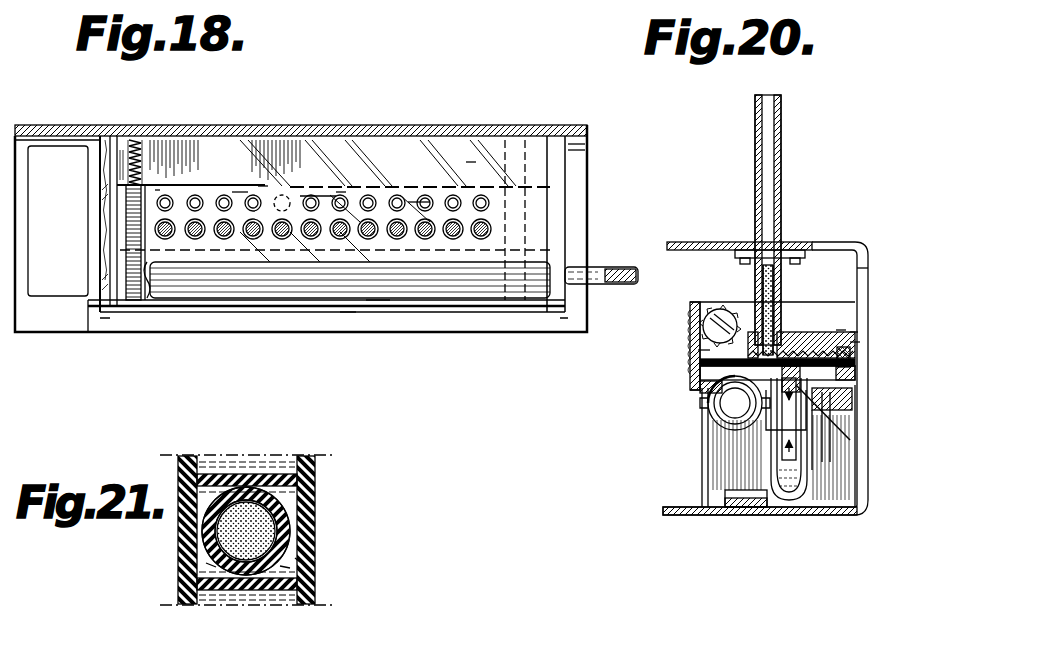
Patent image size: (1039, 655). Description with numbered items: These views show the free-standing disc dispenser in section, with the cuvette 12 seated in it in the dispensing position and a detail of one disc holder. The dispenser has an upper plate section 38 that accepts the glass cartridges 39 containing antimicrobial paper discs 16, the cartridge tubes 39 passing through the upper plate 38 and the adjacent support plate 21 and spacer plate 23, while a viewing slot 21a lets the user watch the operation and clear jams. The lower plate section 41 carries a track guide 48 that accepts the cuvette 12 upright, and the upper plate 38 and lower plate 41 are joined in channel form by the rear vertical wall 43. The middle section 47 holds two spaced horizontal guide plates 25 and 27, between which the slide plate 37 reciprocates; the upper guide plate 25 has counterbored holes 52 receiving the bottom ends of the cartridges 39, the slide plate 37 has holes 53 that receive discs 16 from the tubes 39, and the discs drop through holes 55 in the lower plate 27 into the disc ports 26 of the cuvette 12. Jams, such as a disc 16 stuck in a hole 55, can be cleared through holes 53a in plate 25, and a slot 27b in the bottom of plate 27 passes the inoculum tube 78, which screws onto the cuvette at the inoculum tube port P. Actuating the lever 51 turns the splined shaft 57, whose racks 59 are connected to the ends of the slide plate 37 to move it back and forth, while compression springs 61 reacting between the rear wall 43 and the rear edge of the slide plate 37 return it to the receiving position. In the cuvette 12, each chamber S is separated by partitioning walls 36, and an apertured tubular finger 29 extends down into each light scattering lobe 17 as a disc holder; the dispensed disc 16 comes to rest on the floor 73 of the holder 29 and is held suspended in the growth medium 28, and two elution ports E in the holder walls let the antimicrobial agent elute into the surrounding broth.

In FIG. 18, the cuvette 12 is at (74, 238).
In FIG. 20, the cuvette 12 is at (700, 461).
In FIG. 18, the antimicrobial paper disc 16 is at (196, 224).
In FIG. 20, the antimicrobial paper disc 16 is at (762, 345).
In FIG. 21, the antimicrobial paper disc 16 is at (272, 531).
In FIG. 21, the light scattering lobe 17 is at (190, 488).
In FIG. 20, the support plate 21 is at (818, 258).
In FIG. 20, the viewing slot 21a is at (858, 270).
In FIG. 20, the spacer plate 23 is at (798, 252).
In FIG. 18, the upper guide plate 25 is at (470, 162).
In FIG. 20, the upper guide plate 25 is at (840, 330).
In FIG. 20, the disc port 26 is at (853, 400).
In FIG. 18, the lower guide plate 27 is at (262, 186).
In FIG. 20, the lower guide plate 27 is at (852, 363).
In FIG. 20, the slot 27b is at (700, 392).
In FIG. 20, the growth medium 28 is at (783, 518).
In FIG. 21, the growth medium 28 is at (212, 565).
In FIG. 20, the tubular finger (disc holder) 29 is at (768, 434).
In FIG. 21, the tubular finger (disc holder) 29 is at (285, 567).
In FIG. 21, the partitioning wall 36 is at (285, 488).
In FIG. 18, the slide plate 37 is at (160, 192).
In FIG. 20, the slide plate 37 is at (700, 354).
In FIG. 20, the upper plate section 38 is at (700, 242).
In FIG. 18, the cartridge 39 is at (428, 204).
In FIG. 20, the cartridge 39 is at (790, 139).
In FIG. 18, the lower plate section 41 is at (348, 316).
In FIG. 20, the lower plate section 41 is at (690, 518).
In FIG. 18, the rear vertical wall 43 is at (340, 192).
In FIG. 20, the rear vertical wall 43 is at (858, 332).
In FIG. 18, the middle section 47 is at (24, 318).
In FIG. 20, the middle section 47 is at (688, 325).
In FIG. 20, the track guide 48 is at (748, 520).
In FIG. 18, the lever 51 is at (624, 267).
In FIG. 18, the counterbored hole 52 is at (372, 302).
In FIG. 20, the counterbored hole 52 is at (790, 345).
In FIG. 18, the hole 53 is at (212, 197).
In FIG. 20, the hole 53 is at (812, 354).
In FIG. 18, the hole 53a is at (334, 198).
In FIG. 18, the hole 55 is at (246, 190).
In FIG. 20, the hole 55 is at (852, 378).
In FIG. 18, the splined shaft 57 is at (458, 282).
In FIG. 20, the splined shaft 57 is at (720, 309).
In FIG. 18, the rack 59 is at (134, 302).
In FIG. 20, the rack 59 is at (814, 352).
In FIG. 18, the compression spring 61 is at (136, 140).
In FIG. 20, the compression spring 61 is at (860, 342).
In FIG. 20, the floor 73 is at (814, 470).
In FIG. 21, the floor 73 is at (320, 502).
In FIG. 20, the inoculum tube 78 is at (714, 411).
In FIG. 20, the inoculum tube port P is at (730, 418).
In FIG. 21, the elution port E is at (182, 553).
In FIG. 21, the chamber S is at (300, 560).